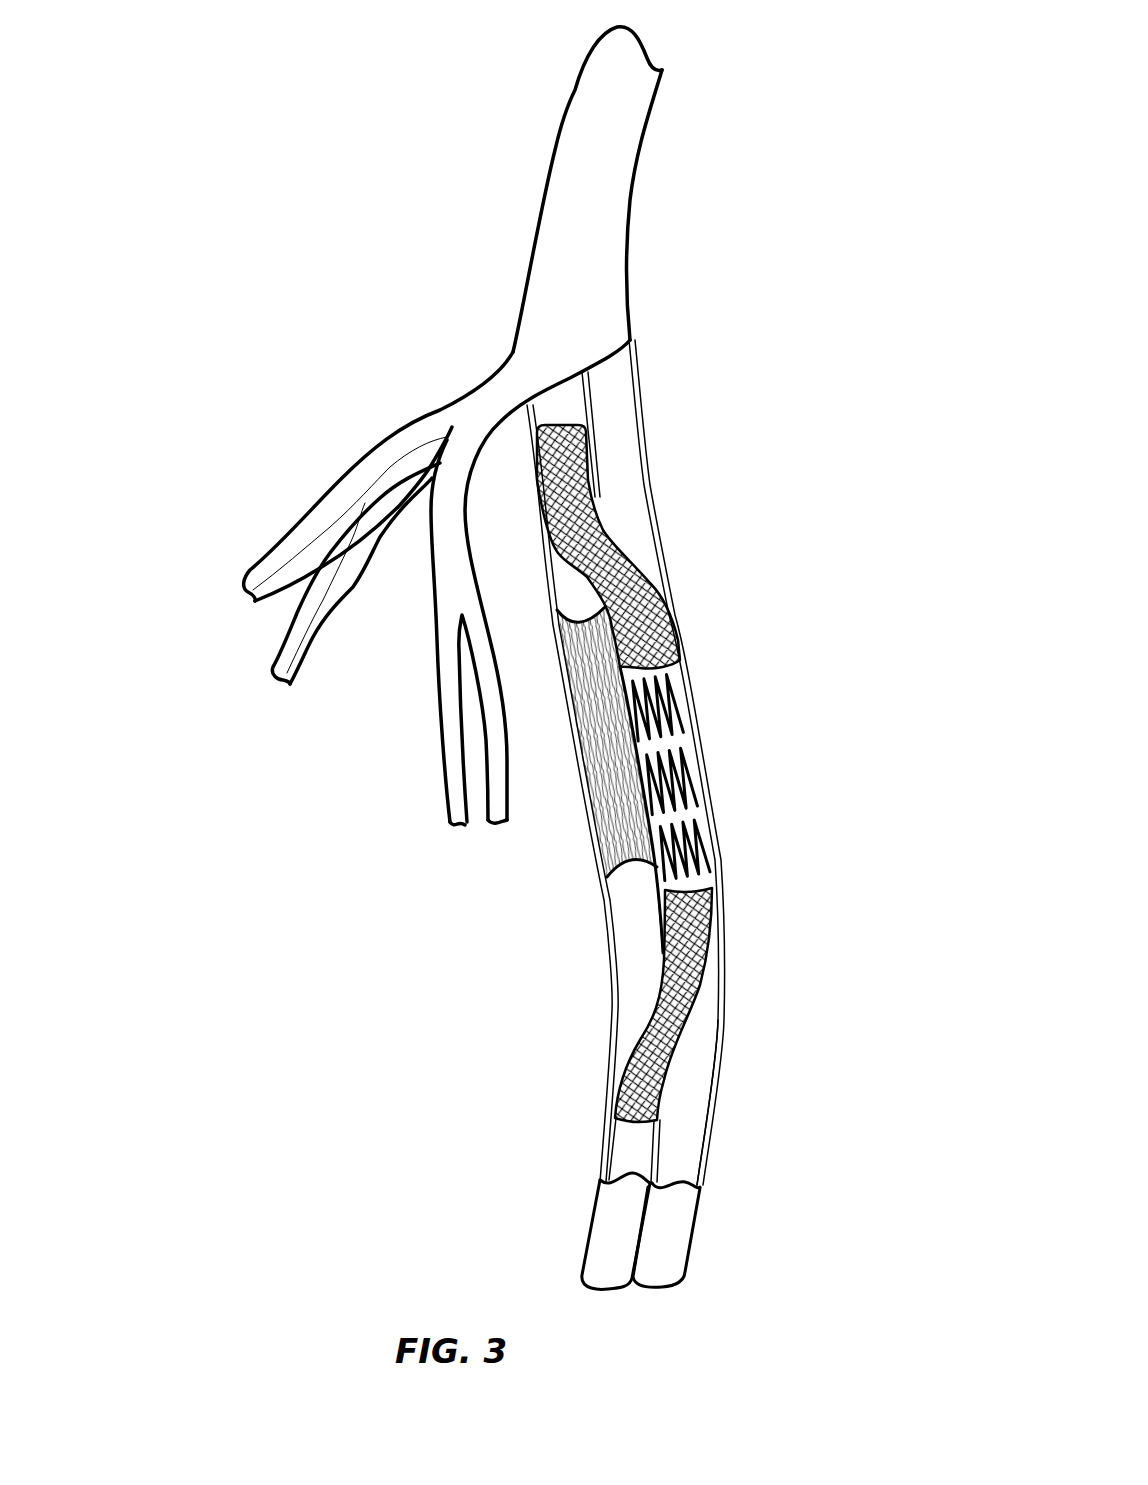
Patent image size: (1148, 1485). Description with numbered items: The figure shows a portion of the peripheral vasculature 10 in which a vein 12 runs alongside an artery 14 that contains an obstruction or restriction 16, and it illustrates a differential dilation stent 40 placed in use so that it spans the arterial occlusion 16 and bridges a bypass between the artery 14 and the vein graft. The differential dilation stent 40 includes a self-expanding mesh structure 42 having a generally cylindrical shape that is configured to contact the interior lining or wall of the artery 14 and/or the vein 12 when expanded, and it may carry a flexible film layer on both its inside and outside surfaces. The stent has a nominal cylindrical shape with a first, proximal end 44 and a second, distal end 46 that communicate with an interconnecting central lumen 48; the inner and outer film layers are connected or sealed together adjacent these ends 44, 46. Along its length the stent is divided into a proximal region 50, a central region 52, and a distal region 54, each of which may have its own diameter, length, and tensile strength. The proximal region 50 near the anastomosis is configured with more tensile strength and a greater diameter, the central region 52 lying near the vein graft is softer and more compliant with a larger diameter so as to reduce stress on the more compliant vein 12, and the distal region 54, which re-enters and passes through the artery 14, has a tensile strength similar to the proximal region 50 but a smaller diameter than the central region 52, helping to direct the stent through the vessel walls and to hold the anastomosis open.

The peripheral vasculature 10 is at (248, 177).
The vein 12 is at (577, 380).
The artery 14 is at (580, 128).
The obstruction or restriction 16 is at (610, 732).
The differential dilation stent 40 is at (665, 607).
The self-expanding mesh structure 42 is at (677, 733).
The first (proximal) end 44 is at (565, 402).
The second (distal) end 46 is at (687, 1125).
The central lumen 48 is at (683, 837).
The proximal region 50 is at (598, 467).
The central region 52 is at (751, 755).
The distal region 54 is at (744, 1028).